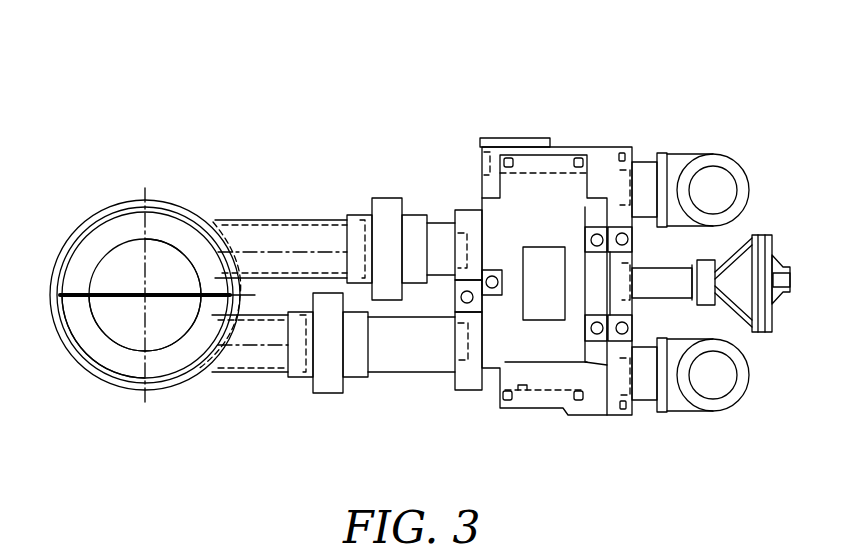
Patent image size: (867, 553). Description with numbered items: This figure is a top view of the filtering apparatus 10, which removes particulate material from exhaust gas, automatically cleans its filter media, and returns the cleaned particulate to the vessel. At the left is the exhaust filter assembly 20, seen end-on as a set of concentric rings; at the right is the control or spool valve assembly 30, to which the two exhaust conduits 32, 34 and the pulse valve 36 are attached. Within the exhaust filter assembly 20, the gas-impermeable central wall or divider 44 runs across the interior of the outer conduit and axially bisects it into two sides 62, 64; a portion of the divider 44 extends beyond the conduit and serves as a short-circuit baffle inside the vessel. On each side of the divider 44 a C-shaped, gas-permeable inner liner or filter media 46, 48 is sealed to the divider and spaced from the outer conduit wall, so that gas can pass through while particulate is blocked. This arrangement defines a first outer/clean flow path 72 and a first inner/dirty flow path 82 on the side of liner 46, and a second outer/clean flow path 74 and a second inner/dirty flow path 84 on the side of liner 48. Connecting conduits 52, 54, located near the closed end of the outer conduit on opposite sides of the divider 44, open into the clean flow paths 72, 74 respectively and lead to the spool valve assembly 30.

The filtering apparatus 10 is at (585, 89).
The exhaust filter assembly 20 is at (190, 390).
The control or spool valve assembly 30 is at (483, 390).
The exhaust conduit 32 is at (748, 390).
The exhaust conduit 34 is at (733, 153).
The pulse valve 36 is at (792, 280).
The central wall or divider 44 is at (118, 294).
The inner gas-permeable liner or filter media 46 is at (122, 353).
The inner gas-permeable liner or filter media 48 is at (173, 243).
The connecting conduit 52 is at (248, 355).
The connecting conduit 54 is at (262, 228).
The first side 62 is at (85, 323).
The second side 64 is at (100, 237).
The first outer/clean flow path 72 is at (100, 350).
The second outer/clean flow path 74 is at (197, 242).
The first inner/dirty flow path 82 is at (133, 333).
The second inner/dirty flow path 84 is at (136, 254).